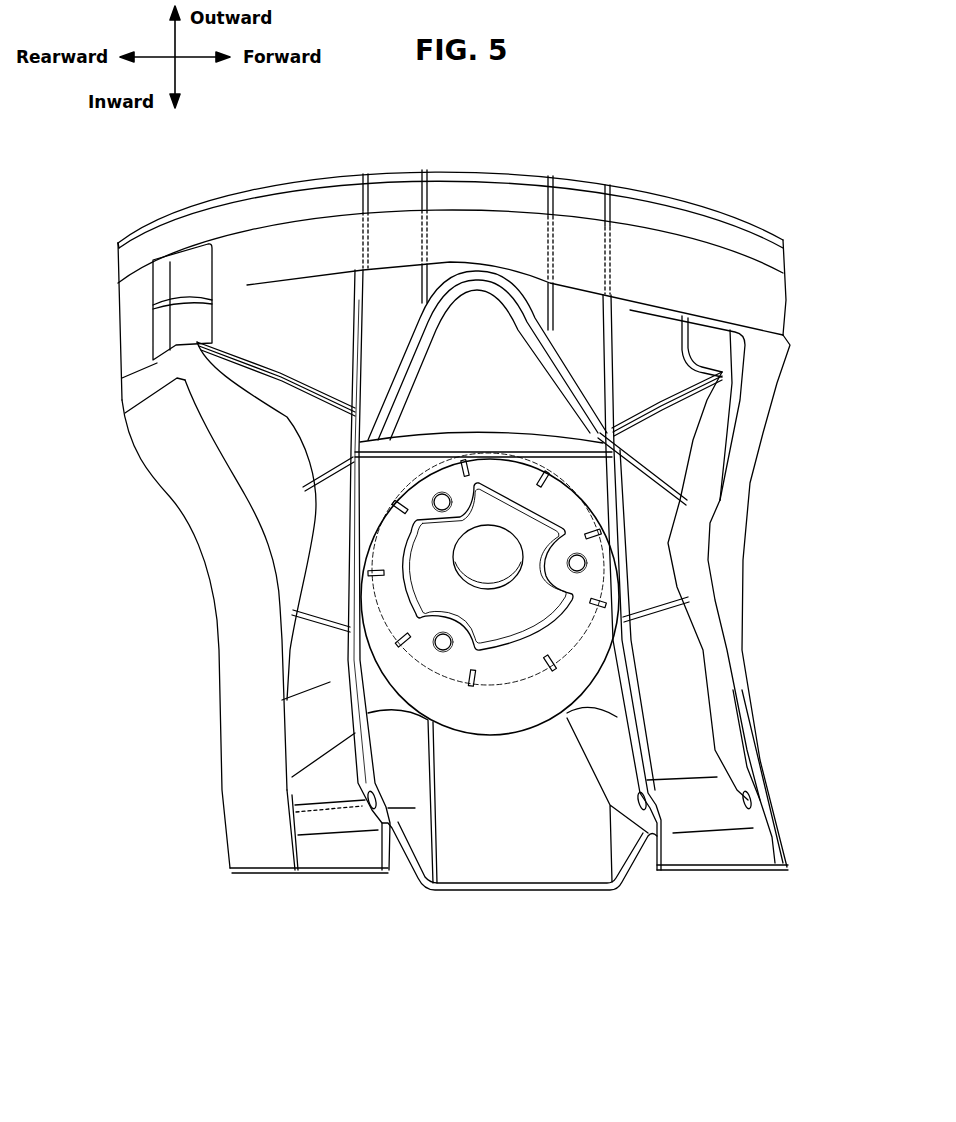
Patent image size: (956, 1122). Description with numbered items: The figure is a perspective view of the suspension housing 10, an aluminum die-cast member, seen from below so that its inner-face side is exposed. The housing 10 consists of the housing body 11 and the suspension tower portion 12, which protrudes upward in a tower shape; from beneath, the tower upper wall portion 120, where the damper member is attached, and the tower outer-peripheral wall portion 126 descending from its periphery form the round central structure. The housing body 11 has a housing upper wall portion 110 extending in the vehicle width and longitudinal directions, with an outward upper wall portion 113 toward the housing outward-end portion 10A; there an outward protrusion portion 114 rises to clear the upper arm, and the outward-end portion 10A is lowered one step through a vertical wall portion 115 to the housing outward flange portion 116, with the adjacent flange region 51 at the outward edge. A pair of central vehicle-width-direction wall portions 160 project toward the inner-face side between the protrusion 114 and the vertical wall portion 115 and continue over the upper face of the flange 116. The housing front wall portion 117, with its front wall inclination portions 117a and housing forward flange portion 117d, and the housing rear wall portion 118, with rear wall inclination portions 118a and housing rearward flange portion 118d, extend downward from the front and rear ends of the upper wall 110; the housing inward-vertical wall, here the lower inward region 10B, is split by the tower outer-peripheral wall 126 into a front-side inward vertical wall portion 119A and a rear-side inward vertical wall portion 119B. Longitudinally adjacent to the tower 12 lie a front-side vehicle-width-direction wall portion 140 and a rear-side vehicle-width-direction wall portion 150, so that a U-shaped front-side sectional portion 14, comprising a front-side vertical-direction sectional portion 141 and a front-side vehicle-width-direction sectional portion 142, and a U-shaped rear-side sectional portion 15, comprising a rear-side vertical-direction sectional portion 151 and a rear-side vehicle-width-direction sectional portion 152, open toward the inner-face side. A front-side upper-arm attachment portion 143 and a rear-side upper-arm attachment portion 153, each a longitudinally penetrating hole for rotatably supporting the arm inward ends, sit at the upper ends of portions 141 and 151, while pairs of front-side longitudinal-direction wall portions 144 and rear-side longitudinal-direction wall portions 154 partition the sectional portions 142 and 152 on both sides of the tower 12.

The suspension housing 10 is at (598, 170).
The housing outward-end portion 10A is at (120, 310).
The inner lower portion 10B is at (475, 928).
The housing body 11 is at (255, 300).
The suspension tower portion 12 is at (556, 848).
The front-side sectional portion 14 is at (717, 847).
The rear-side sectional portion 15 is at (340, 843).
The upper flange 51 is at (640, 215).
The housing upper wall portion 110 is at (307, 453).
The outward upper wall portion 113 is at (365, 300).
The outward protrusion portion 114 is at (491, 366).
The vertical wall portion 115 is at (342, 276).
The housing outward flange portion 116 is at (628, 278).
The housing front wall portion 117 is at (768, 878).
The front wall inclination portion 117a is at (700, 453).
The housing forward flange portion 117d is at (735, 632).
The housing rear wall portion 118 is at (268, 878).
The rear wall inclination portion 118a is at (297, 577).
The housing rearward flange portion 118d is at (242, 660).
The front-side inward vertical wall portion 119A is at (745, 876).
The rear-side inward vertical wall portion 119B is at (312, 877).
The tower upper wall portion 120 is at (505, 705).
The tower outer-peripheral wall portion 126 is at (507, 880).
The front-side vehicle-width-direction wall portion 140 is at (638, 717).
The front-side vertical-direction sectional portion 141 is at (688, 877).
The front-side vehicle-width-direction sectional portion 142 is at (652, 410).
The front-side upper-arm attachment portion 143 is at (747, 788).
The front-side longitudinal-direction wall portion 144 is at (662, 590).
The rear-side vehicle-width-direction wall portion 150 is at (366, 738).
The rear-side vertical-direction sectional portion 151 is at (365, 878).
The rear-side vehicle-width-direction sectional portion 152 is at (330, 443).
The rear-side upper-arm attachment portion 153 is at (295, 807).
The rear-side longitudinal-direction wall portion 154 is at (323, 607).
The central vehicle-width-direction wall portion 160 is at (545, 283).